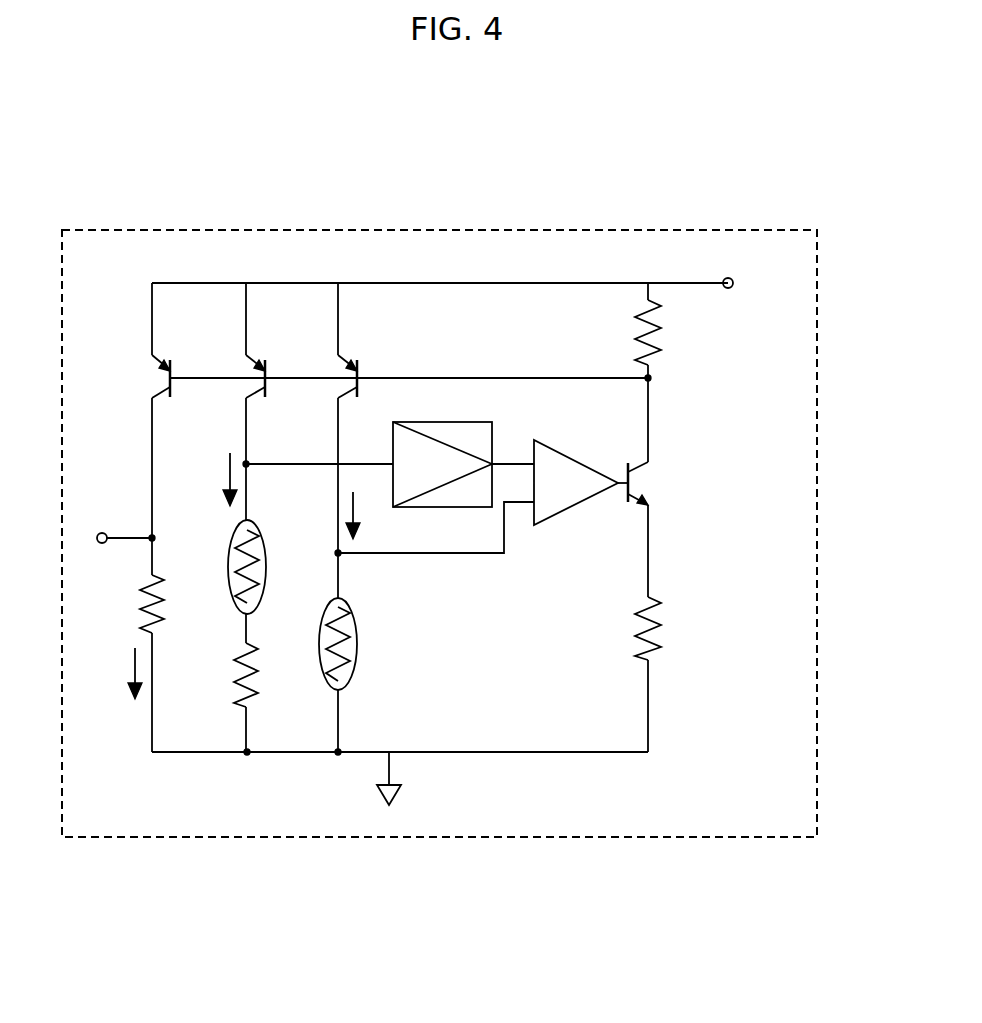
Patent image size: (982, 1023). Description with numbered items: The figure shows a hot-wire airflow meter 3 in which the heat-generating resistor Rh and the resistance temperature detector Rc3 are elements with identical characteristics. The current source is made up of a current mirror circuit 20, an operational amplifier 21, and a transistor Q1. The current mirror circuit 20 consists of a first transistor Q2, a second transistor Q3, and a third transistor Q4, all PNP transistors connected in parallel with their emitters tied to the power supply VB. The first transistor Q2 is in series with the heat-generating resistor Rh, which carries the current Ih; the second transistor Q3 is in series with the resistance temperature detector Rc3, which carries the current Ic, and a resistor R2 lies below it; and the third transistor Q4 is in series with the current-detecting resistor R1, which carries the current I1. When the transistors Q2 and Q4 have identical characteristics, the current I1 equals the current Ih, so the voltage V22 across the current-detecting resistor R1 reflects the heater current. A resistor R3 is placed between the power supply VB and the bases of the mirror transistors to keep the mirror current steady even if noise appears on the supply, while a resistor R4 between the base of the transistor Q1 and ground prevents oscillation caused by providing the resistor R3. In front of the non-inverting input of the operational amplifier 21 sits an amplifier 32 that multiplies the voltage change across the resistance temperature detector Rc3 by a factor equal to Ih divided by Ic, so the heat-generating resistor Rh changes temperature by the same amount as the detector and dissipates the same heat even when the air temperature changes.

The airflow meter 3 is at (817, 335).
The current mirror circuit 20 is at (265, 305).
The operational amplifier 21 is at (570, 505).
The amplifier 32 is at (492, 425).
The transistor Q1 is at (652, 481).
The first transistor Q2 is at (368, 369).
The second transistor Q3 is at (275, 369).
The third transistor Q4 is at (180, 369).
The current-detecting resistor R1 is at (163, 640).
The resistor R2 is at (262, 690).
The resistor R3 is at (663, 333).
The resistor R4 is at (663, 627).
The thermistor Rc3 is at (266, 560).
The heat-generating resistor Rh is at (358, 648).
The power supply VB is at (747, 285).
The voltage V22 is at (117, 523).
The current I1 is at (125, 673).
The current Ic is at (220, 479).
The current Ih is at (362, 515).